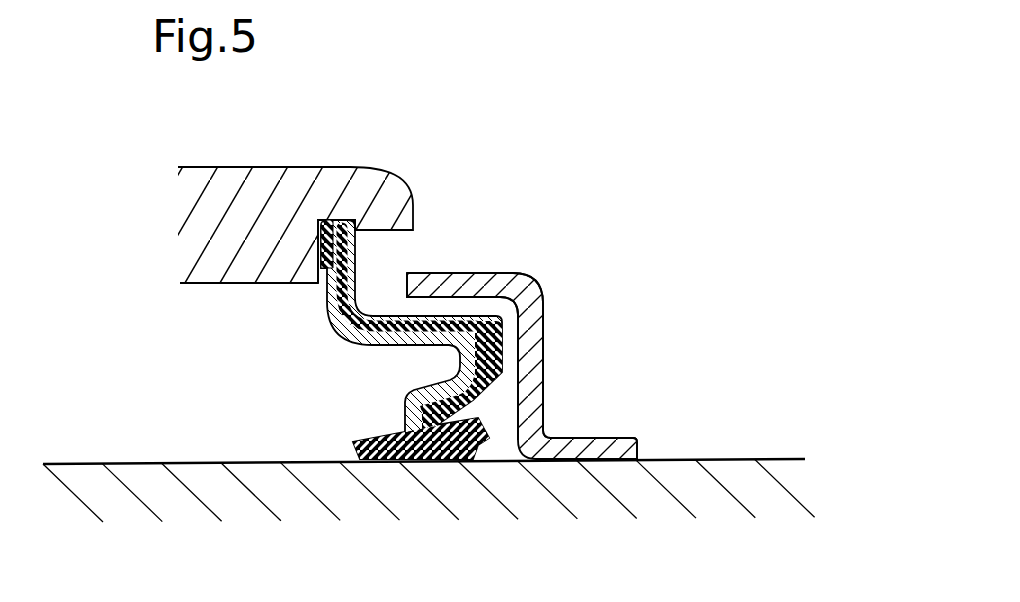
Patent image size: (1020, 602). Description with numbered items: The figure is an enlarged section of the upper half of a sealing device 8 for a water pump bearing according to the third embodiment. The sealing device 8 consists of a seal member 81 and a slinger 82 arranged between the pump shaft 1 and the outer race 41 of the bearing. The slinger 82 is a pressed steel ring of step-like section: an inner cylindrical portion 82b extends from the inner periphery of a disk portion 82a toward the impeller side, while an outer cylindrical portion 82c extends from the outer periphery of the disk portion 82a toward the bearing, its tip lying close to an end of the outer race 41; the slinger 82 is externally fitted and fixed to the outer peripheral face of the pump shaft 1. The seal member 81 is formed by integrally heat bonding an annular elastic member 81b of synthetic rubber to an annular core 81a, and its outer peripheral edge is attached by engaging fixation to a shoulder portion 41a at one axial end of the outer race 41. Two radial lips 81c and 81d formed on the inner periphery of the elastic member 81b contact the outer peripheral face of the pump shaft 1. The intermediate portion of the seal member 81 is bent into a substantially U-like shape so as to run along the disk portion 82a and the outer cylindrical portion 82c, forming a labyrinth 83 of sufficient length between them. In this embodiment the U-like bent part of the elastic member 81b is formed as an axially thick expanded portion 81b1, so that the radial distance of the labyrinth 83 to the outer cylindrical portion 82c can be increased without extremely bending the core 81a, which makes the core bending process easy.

The pump shaft 1 is at (153, 463).
The sealing device 8 is at (576, 219).
The outer race 41 is at (235, 177).
The shoulder portion 41a is at (318, 223).
The seal member 81 is at (322, 320).
The annular core 81a is at (363, 340).
The annular elastic member 81b is at (421, 320).
The expanded portion 81b1 is at (497, 377).
The radial lip 81c is at (472, 462).
The radial lip 81d is at (364, 462).
The slinger 82 is at (556, 323).
The disk portion 82a is at (540, 367).
The inner cylindrical portion 82b is at (608, 438).
The outer cylindrical portion 82c is at (488, 275).
The labyrinth 83 is at (541, 295).